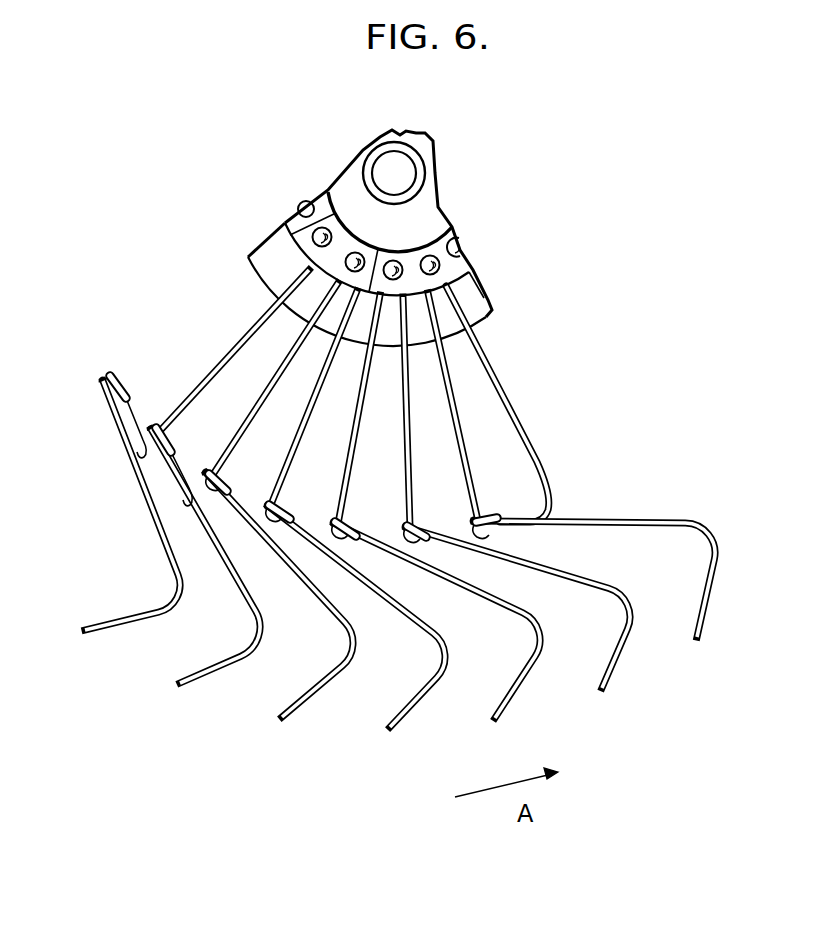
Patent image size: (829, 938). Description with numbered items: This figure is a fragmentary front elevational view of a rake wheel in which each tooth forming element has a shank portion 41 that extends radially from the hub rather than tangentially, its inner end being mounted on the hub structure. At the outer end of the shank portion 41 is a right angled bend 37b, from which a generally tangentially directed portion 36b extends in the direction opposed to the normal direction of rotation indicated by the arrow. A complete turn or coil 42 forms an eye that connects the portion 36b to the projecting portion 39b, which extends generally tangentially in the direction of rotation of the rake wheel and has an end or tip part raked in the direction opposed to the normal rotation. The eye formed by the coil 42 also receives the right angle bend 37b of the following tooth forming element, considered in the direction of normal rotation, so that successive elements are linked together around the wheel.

The shank portion 41 is at (353, 398).
The generally tangentially directed portion 36b is at (303, 442).
The coil 42 is at (267, 453).
The right angled bend 37b is at (289, 470).
The projecting portion 39b is at (400, 554).